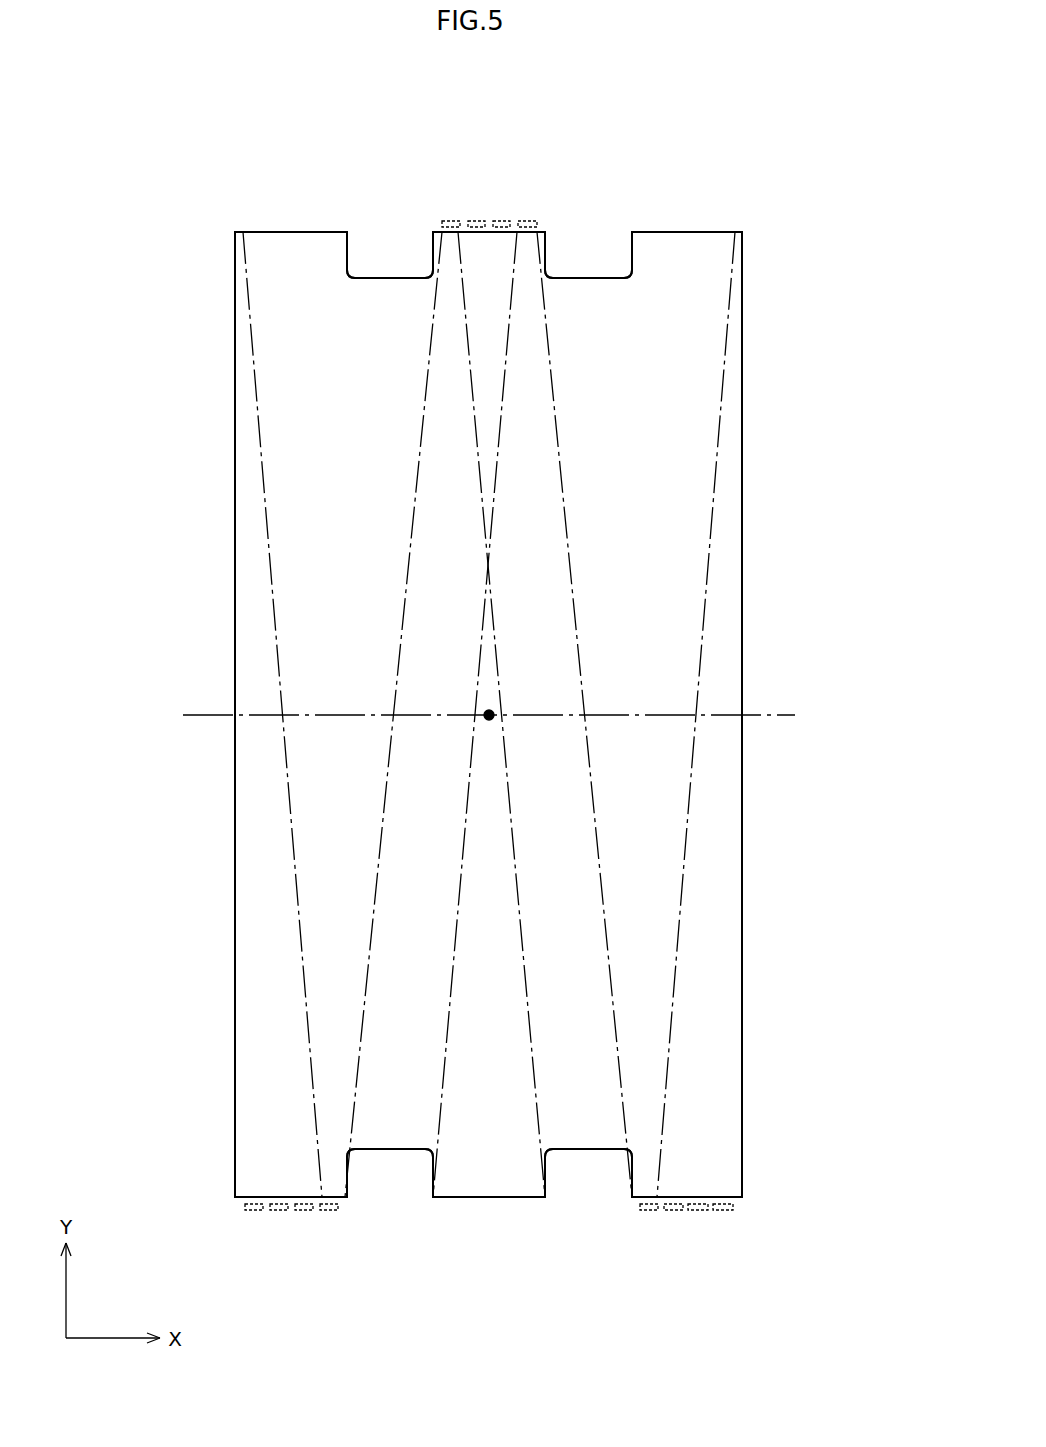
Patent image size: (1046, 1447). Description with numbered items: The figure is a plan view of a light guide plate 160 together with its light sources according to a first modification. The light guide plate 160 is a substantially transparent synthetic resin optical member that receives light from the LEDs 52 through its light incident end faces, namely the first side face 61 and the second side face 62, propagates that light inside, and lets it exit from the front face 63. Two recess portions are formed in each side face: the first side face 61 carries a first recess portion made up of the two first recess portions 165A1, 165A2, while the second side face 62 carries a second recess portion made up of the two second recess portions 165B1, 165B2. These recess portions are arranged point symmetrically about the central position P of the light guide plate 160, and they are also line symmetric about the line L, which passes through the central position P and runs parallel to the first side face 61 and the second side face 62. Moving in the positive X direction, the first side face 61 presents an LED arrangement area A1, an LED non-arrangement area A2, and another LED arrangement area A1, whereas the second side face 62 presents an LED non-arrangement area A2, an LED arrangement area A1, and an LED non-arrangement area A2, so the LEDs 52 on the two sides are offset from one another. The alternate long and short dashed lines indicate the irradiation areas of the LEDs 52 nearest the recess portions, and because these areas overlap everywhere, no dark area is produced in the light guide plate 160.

The light guide plate 160 is at (768, 405).
The second side face 62 is at (317, 232).
The front face 63 is at (723, 598).
The first side face 61 is at (467, 1197).
The LED 52 is at (282, 1208).
The second recess portion 165B1 is at (398, 277).
The second recess portion 165B2 is at (588, 278).
The first recess portion 165A1 is at (382, 1149).
The first recess portion 165A2 is at (582, 1149).
The LED arrangement area A1 is at (440, 223).
The LED non-arrangement area A2 is at (285, 232).
The line L is at (476, 719).
The central position P is at (489, 731).